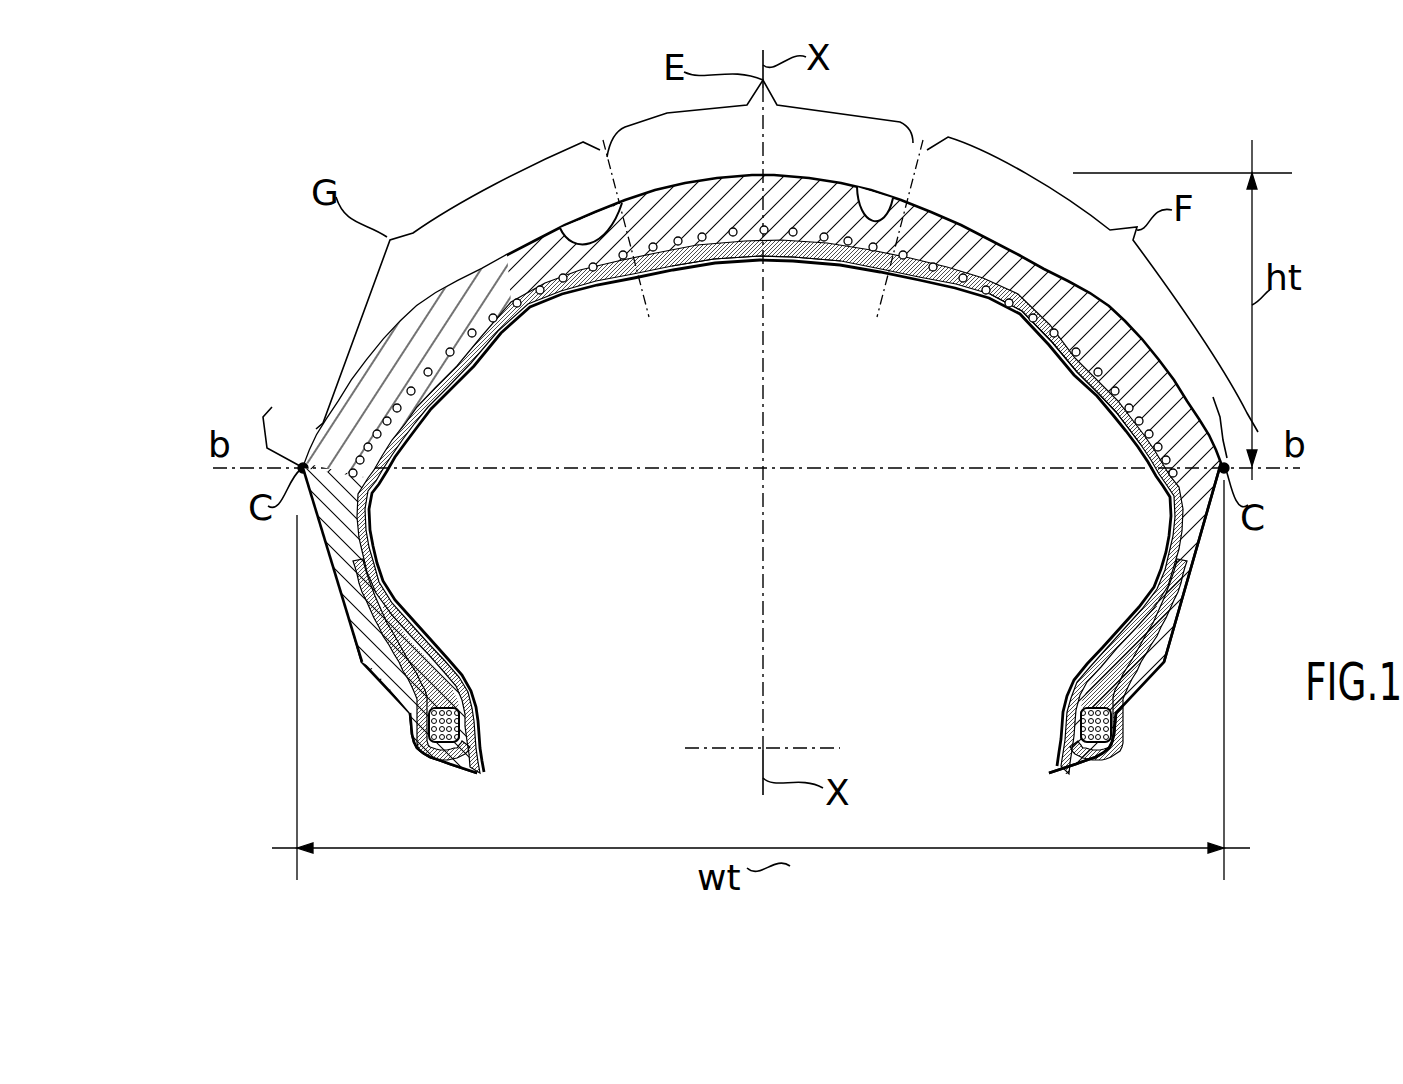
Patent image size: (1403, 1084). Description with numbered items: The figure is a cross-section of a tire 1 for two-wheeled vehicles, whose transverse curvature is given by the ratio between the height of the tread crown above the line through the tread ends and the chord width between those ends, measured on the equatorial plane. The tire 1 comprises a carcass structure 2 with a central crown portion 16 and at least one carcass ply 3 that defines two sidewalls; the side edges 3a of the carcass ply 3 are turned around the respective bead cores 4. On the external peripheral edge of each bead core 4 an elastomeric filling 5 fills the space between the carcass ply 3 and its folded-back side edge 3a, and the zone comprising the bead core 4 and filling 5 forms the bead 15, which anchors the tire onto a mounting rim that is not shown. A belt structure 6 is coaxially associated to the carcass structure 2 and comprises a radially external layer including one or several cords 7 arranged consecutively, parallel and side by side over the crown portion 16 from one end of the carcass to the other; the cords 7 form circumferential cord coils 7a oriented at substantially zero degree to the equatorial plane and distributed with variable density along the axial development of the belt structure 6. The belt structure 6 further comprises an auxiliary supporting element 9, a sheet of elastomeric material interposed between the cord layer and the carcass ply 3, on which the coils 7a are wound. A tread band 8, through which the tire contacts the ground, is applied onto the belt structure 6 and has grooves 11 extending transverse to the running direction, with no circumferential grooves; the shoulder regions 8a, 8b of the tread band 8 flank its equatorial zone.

The tire 1 is at (1003, 137).
The carcass structure 2 is at (1176, 536).
The carcass ply 3 is at (1078, 372).
The side edges of the carcass ply 3a is at (405, 670).
The bead cores 4 is at (466, 722).
The elastomeric filling 5 is at (455, 662).
The belt structure 6 is at (315, 515).
The cords 7 is at (512, 303).
The circumferential cord coils 7a is at (707, 250).
The tread band 8 is at (1043, 254).
The tread shoulder portion 8a is at (1213, 397).
The tread shoulder portion 8b is at (323, 423).
The auxiliary supporting element 9 is at (367, 505).
The grooves 11 is at (594, 232).
The bead 15 is at (487, 745).
The central crown portion 16 is at (1000, 292).